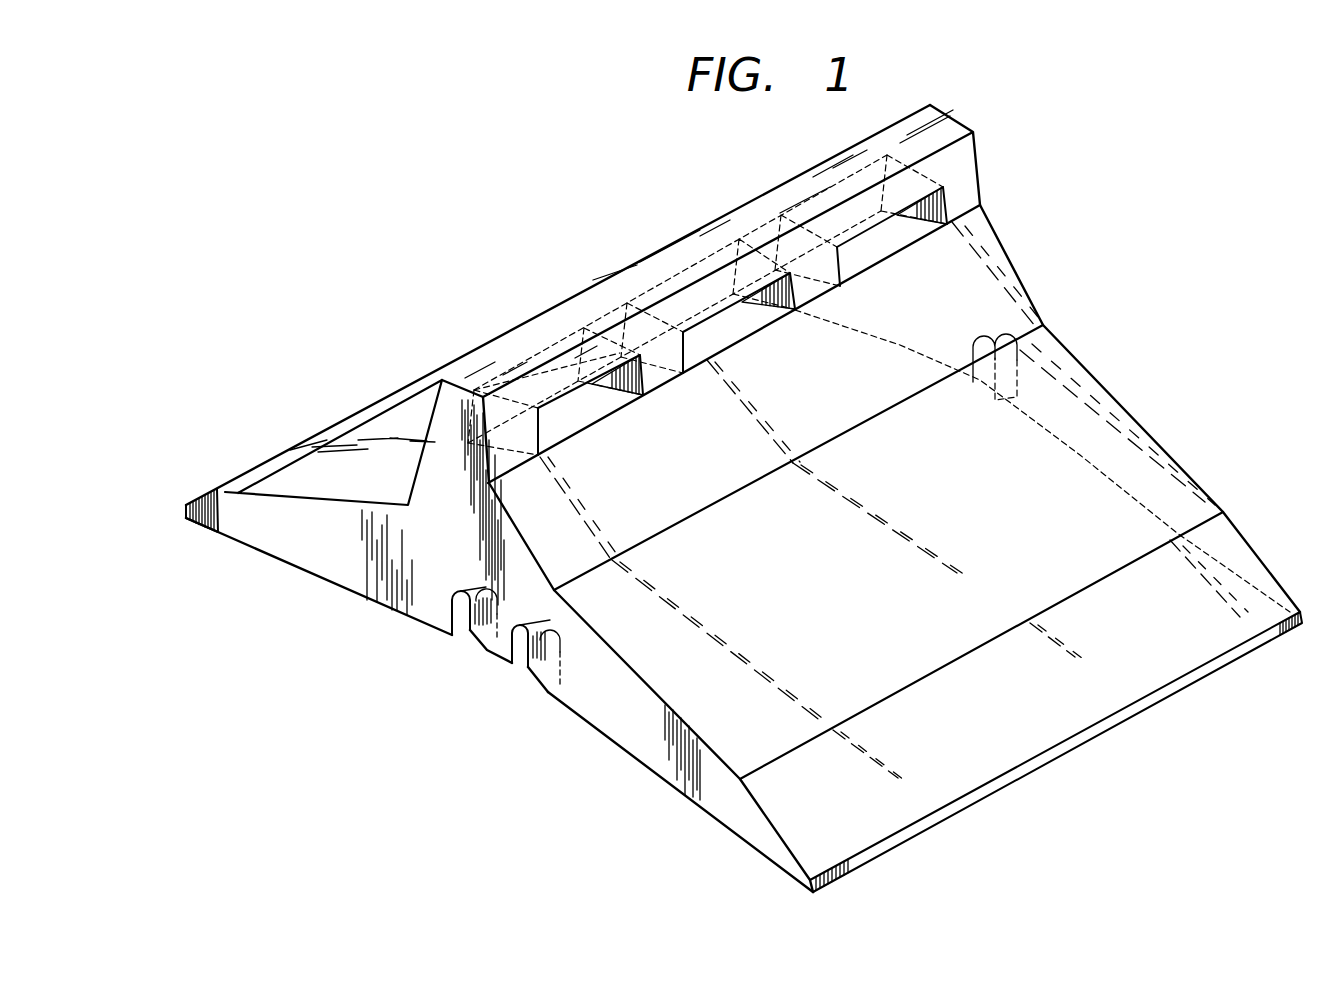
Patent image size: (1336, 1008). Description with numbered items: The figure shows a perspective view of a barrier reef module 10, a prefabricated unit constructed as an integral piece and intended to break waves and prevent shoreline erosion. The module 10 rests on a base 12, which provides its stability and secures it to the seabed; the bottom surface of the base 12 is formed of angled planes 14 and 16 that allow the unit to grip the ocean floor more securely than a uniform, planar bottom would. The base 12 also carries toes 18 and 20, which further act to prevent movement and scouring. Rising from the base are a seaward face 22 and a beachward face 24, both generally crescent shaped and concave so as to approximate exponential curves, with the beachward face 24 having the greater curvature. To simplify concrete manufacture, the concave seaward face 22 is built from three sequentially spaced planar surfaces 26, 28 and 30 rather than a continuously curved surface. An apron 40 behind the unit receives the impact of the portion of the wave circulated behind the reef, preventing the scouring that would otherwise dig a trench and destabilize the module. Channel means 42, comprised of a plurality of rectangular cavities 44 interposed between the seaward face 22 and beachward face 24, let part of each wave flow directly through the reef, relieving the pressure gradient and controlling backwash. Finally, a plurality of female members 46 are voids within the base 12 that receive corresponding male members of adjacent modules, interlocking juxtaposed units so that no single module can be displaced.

The barrier reef module 10 is at (574, 156).
The base 12 is at (623, 726).
The angled plane 14 is at (332, 587).
The angled plane 16 is at (686, 790).
The toe 18 is at (870, 806).
The toe 20 is at (218, 492).
The seaward face 22 is at (1170, 448).
The beachward face 24 is at (420, 470).
The planar surface 26 is at (988, 534).
The planar surface 28 is at (909, 319).
The planar surface 30 is at (941, 181).
The apron 40 is at (314, 553).
The channel means 42 is at (713, 340).
The rectangular cavity 44 is at (563, 420).
The female member 46 is at (465, 645).